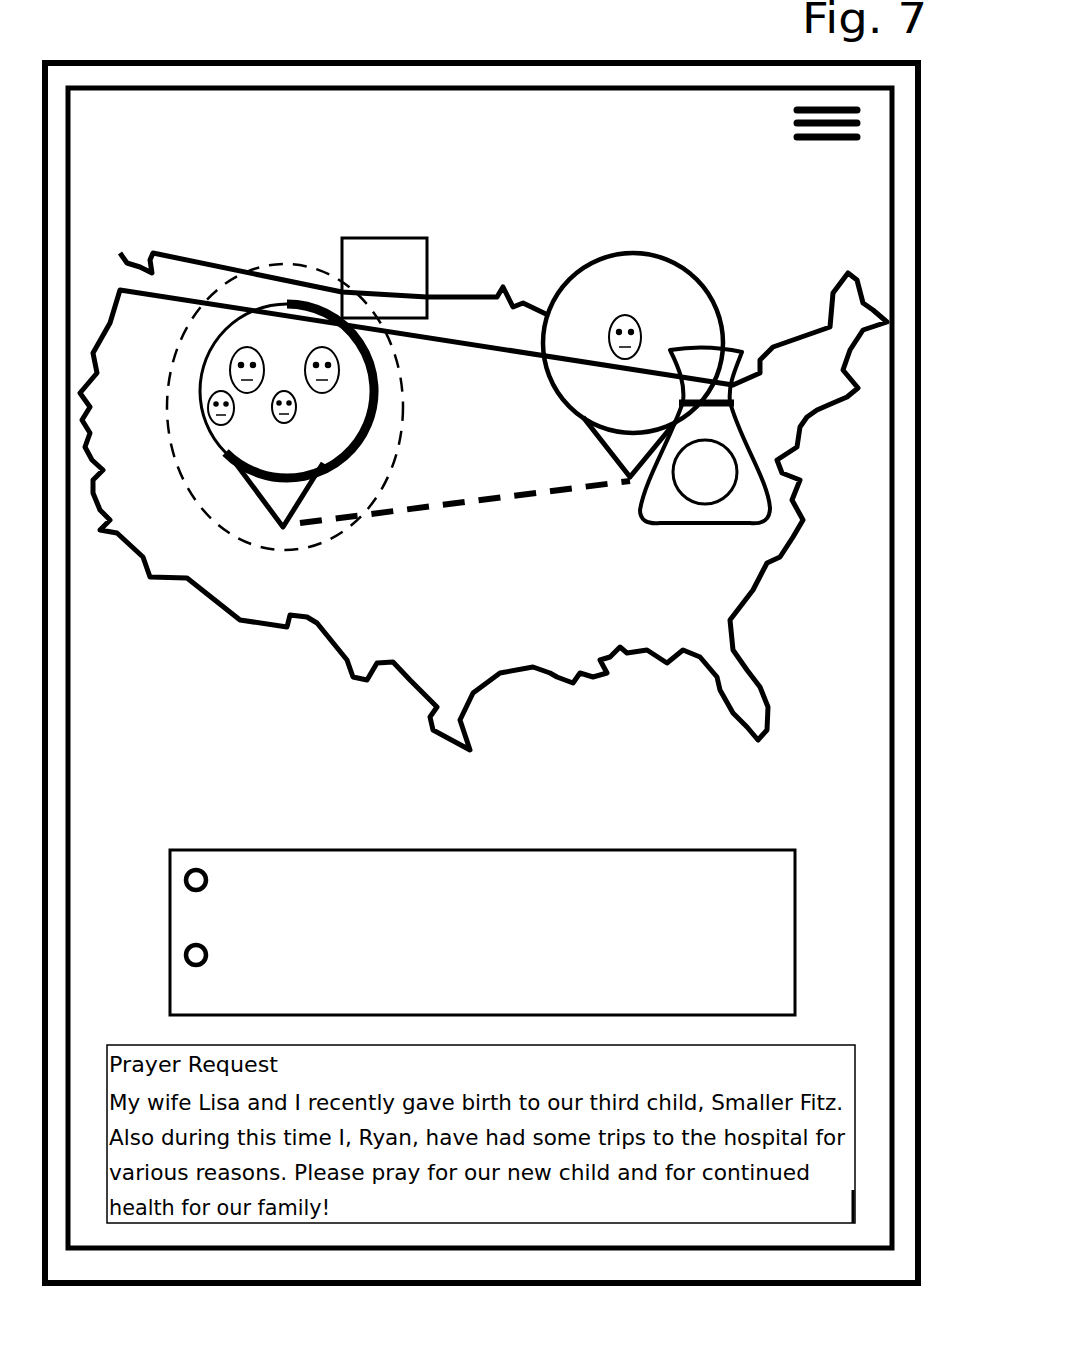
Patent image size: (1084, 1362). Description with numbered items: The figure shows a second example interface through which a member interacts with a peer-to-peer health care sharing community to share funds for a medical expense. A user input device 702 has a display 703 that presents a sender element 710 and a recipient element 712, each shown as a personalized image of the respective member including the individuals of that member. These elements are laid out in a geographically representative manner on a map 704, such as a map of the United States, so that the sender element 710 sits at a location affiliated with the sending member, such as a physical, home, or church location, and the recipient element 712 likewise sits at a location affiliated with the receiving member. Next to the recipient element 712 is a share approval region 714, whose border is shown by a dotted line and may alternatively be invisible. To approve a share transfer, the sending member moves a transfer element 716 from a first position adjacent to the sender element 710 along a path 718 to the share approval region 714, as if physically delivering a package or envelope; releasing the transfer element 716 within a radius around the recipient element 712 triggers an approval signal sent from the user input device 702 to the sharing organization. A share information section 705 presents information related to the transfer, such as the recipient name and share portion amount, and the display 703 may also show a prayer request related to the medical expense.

The user input device 702 is at (918, 282).
The display 703 is at (890, 193).
The map 704 is at (163, 252).
The share information section 705 is at (262, 848).
The sender element 710 is at (620, 257).
The recipient element 712 is at (375, 413).
The share approval region 714 is at (280, 550).
The transfer element 716 is at (657, 522).
The path 718 is at (492, 494).